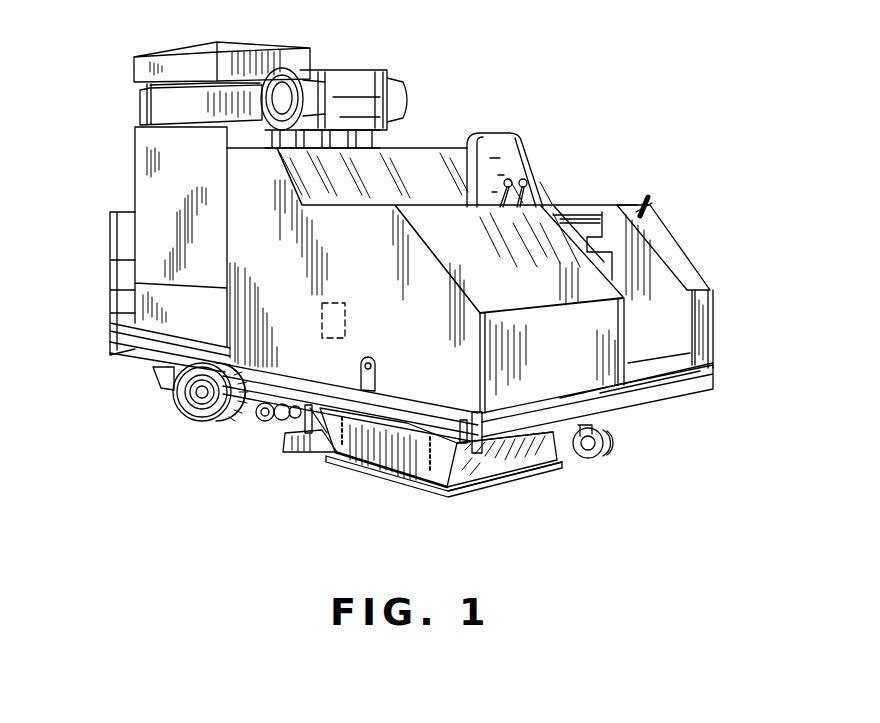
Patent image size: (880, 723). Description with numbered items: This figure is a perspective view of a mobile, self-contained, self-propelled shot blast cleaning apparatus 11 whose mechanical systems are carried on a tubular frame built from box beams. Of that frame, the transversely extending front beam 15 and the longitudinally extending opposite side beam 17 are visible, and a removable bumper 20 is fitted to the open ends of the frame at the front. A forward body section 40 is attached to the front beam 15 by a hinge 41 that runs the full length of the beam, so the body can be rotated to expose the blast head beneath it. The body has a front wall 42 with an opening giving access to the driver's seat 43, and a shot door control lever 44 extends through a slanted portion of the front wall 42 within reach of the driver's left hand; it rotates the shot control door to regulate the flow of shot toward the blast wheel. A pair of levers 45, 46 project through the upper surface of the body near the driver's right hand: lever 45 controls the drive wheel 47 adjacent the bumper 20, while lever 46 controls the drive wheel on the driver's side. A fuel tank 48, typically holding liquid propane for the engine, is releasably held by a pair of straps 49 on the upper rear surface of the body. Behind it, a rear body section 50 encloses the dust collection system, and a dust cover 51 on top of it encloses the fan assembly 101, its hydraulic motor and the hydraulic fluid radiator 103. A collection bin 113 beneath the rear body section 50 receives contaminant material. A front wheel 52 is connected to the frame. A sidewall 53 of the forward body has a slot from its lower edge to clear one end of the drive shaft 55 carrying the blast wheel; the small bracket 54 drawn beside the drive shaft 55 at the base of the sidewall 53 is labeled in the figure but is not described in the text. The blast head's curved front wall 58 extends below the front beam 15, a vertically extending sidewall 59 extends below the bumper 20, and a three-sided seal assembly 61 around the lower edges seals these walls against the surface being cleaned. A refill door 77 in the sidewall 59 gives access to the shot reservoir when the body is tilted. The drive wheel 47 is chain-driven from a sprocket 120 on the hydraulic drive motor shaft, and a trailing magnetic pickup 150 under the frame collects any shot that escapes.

The shot blast cleaning apparatus 11 is at (587, 77).
The front beam 15 is at (705, 393).
The opposite side beam 17 is at (130, 363).
The removable bumper 20 is at (413, 423).
The forward body section 40 is at (592, 279).
The hinge 41 is at (623, 388).
The front wall 42 is at (561, 357).
The driver's seat 43 is at (500, 148).
The shot door control lever 44 is at (644, 196).
The lever 45 is at (511, 181).
The lever 46 is at (527, 183).
The drive wheel 47 is at (183, 425).
The fuel tank 48 is at (380, 95).
The straps 49 is at (383, 73).
The rear body section 50 is at (137, 161).
The dust cover 51 is at (246, 63).
The front wheel 52 is at (609, 454).
The sidewall 53 is at (424, 323).
The squeegee mounting bracket 54 is at (378, 388).
The drive shaft 55 is at (360, 368).
The curved front wall 58 is at (470, 457).
The sidewall 59 is at (370, 442).
The seal assembly 61 is at (452, 500).
The refill door 77 is at (343, 310).
The fan assembly 101 is at (189, 100).
The hydraulic fluid radiator 103 is at (148, 89).
The collection bin 113 is at (158, 385).
The sprocket 120 is at (263, 423).
The trailing magnetic pickup 150 is at (291, 455).